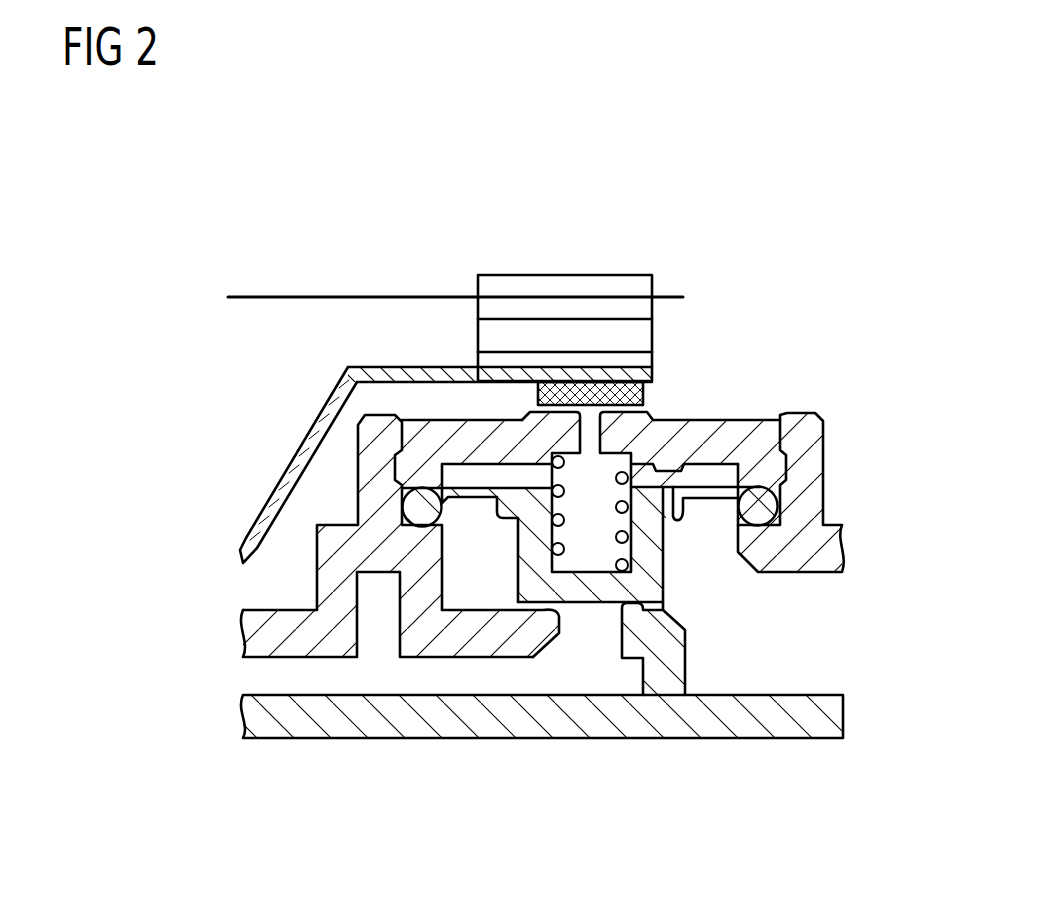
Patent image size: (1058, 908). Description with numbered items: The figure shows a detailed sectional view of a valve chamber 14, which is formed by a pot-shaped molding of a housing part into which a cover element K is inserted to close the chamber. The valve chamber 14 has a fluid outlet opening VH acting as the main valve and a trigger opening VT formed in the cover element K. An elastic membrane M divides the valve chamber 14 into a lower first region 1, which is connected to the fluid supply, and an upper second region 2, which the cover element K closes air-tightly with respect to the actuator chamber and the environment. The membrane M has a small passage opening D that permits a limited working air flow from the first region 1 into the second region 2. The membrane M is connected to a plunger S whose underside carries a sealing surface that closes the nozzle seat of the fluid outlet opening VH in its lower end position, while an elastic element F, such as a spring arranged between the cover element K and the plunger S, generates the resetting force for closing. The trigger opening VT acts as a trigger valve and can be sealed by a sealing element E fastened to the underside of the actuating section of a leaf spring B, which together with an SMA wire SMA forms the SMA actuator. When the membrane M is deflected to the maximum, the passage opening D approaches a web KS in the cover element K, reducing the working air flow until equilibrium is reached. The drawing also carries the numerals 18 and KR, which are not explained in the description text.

The valve chamber 14 is at (798, 216).
The SMA wire SMA is at (455, 276).
The sealing element E is at (611, 388).
The cover element K is at (486, 436).
The leaf spring B is at (298, 465).
The trigger opening VT is at (592, 432).
The elastic element F is at (620, 537).
The second region 2 is at (473, 477).
The housing part 18 is at (377, 481).
The plunger S is at (533, 582).
The first region 1 is at (483, 570).
The fluid outlet opening VH is at (577, 625).
The web KS is at (672, 470).
The piston sealing ring KR is at (767, 478).
The membrane M is at (708, 498).
The passage opening D is at (669, 518).